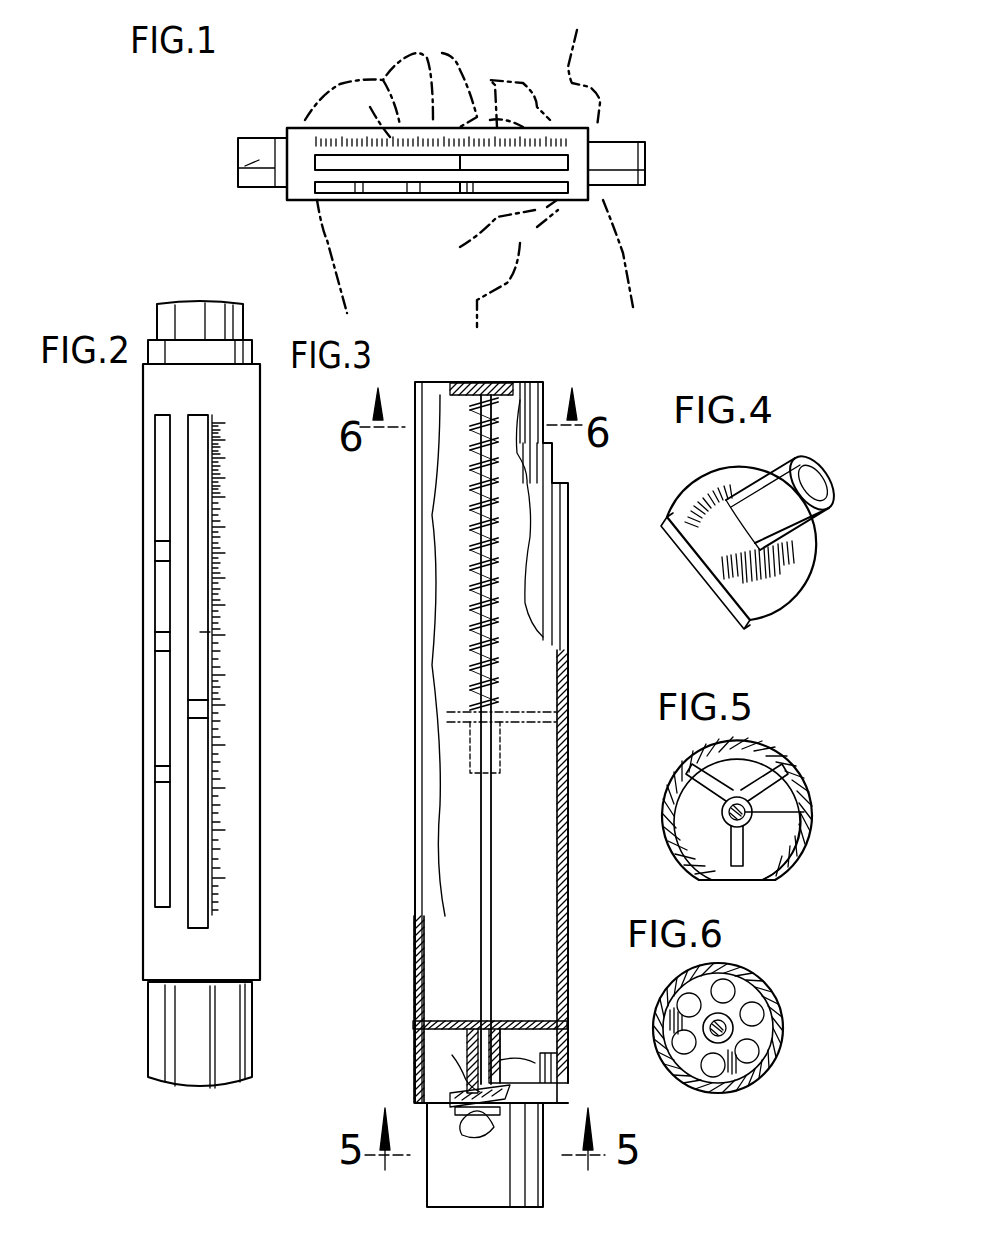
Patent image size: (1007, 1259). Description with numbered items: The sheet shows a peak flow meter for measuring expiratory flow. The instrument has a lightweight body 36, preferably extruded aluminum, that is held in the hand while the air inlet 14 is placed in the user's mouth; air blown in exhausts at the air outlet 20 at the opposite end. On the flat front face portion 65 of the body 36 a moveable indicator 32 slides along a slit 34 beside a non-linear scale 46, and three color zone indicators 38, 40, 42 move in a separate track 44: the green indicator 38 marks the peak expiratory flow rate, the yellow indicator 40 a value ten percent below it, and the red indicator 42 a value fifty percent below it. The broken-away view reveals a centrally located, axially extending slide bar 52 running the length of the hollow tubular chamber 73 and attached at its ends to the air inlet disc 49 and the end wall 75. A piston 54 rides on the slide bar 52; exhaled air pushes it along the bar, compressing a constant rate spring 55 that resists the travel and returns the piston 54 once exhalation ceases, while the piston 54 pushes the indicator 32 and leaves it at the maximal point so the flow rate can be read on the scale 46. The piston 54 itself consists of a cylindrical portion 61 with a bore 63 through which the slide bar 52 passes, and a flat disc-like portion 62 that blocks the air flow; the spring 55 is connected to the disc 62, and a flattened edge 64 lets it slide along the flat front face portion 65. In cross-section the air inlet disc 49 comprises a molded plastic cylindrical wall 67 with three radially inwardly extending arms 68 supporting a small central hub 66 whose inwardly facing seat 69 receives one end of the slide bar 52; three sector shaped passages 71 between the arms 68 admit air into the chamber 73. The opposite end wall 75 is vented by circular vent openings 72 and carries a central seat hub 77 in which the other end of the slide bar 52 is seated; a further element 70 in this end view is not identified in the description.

In FIG. 1, the air inlet 14 is at (629, 154).
In FIG. 3, the air inlet 14 is at (541, 1173).
In FIG. 1, the air outlet 20 is at (244, 170).
In FIG. 2, the air outlet 20 is at (162, 308).
In FIG. 3, the air outlet 20 is at (540, 385).
In FIG. 1, the moveable indicator 32 is at (435, 144).
In FIG. 2, the moveable indicator 32 is at (198, 710).
In FIG. 1, the slit 34 is at (480, 162).
In FIG. 2, the slit 34 is at (200, 630).
In FIG. 1, the body 36 is at (297, 128).
In FIG. 2, the body 36 is at (178, 396).
In FIG. 2, the color zone indicator 38 is at (158, 549).
In FIG. 2, the color zone indicator 40 is at (158, 642).
In FIG. 2, the color zone indicator 42 is at (157, 777).
In FIG. 2, the track 44 is at (160, 836).
In FIG. 1, the non-linear scale 46 is at (501, 150).
In FIG. 2, the non-linear scale 46 is at (218, 577).
In FIG. 3, the air inlet disc 49 is at (530, 1080).
In FIG. 5, the air inlet disc 49 is at (795, 747).
In FIG. 3, the slide bar 52 is at (487, 802).
In FIG. 5, the slide bar 52 is at (708, 851).
In FIG. 6, the slide bar 52 is at (730, 1013).
In FIG. 3, the piston 54 is at (553, 706).
In FIG. 3, the constant rate spring 55 is at (497, 640).
In FIG. 3, the cylindrical portion 61 is at (502, 765).
In FIG. 4, the cylindrical portion 61 is at (810, 517).
In FIG. 3, the disc-like portion 62 is at (563, 732).
In FIG. 4, the disc-like portion 62 is at (787, 558).
In FIG. 4, the bore 63 is at (822, 468).
In FIG. 4, the flattened edge 64 is at (722, 618).
In FIG. 2, the flat front face portion 65 is at (238, 953).
In FIG. 5, the central hub 66 is at (786, 820).
In FIG. 5, the cylindrical wall 67 is at (806, 855).
In FIG. 3, the arms 68 is at (453, 1073).
In FIG. 5, the arms 68 is at (741, 810).
In FIG. 3, the seat 69 is at (494, 1026).
In FIG. 5, the seat 69 is at (740, 790).
In FIG. 6, the hub ring 70 is at (720, 1023).
In FIG. 5, the sector shaped passages 71 is at (752, 764).
In FIG. 6, the vent openings 72 is at (752, 1046).
In FIG. 3, the hollow tubular chamber 73 is at (511, 876).
In FIG. 3, the end wall 75 is at (500, 388).
In FIG. 6, the end wall 75 is at (740, 1061).
In FIG. 3, the central seat hub 77 is at (442, 460).